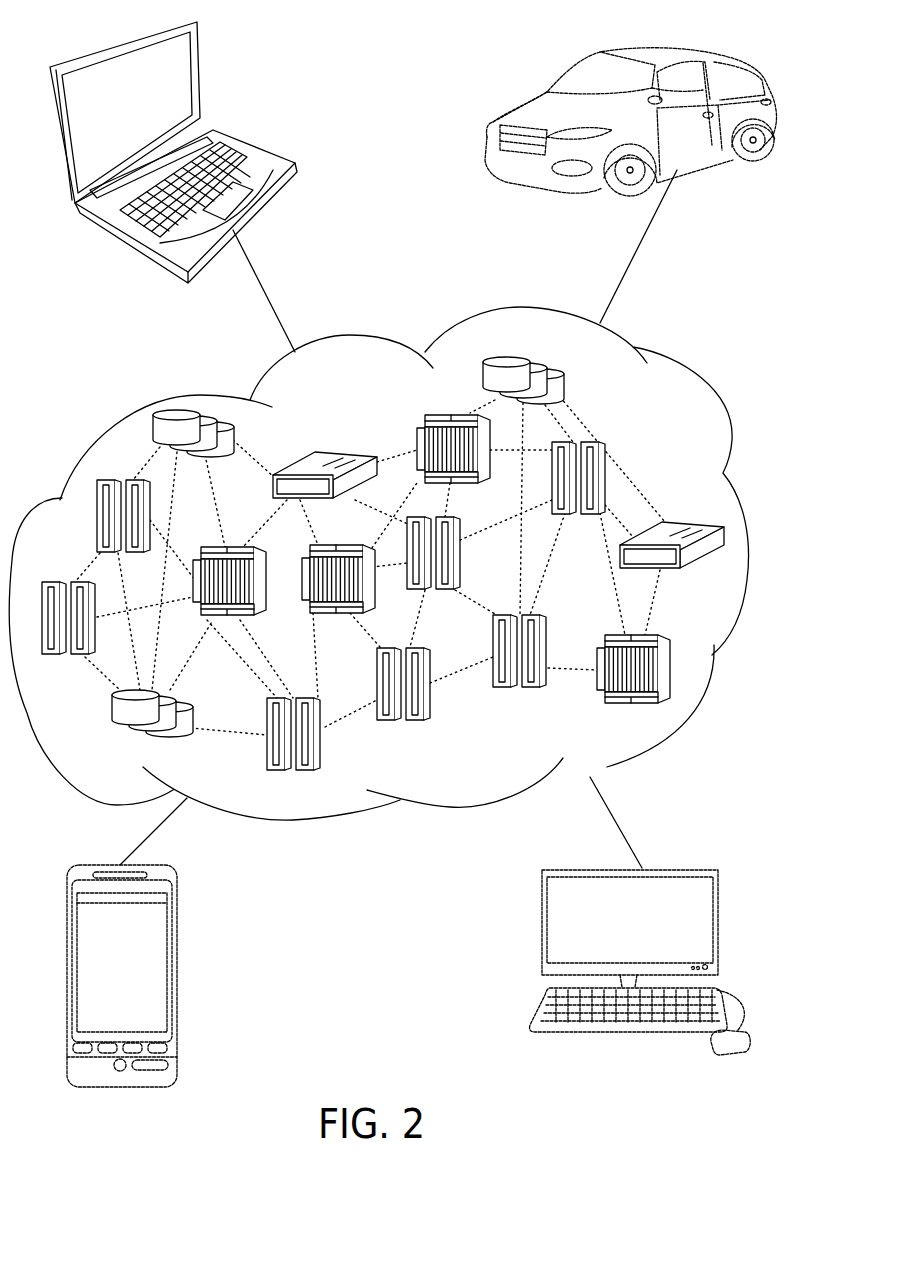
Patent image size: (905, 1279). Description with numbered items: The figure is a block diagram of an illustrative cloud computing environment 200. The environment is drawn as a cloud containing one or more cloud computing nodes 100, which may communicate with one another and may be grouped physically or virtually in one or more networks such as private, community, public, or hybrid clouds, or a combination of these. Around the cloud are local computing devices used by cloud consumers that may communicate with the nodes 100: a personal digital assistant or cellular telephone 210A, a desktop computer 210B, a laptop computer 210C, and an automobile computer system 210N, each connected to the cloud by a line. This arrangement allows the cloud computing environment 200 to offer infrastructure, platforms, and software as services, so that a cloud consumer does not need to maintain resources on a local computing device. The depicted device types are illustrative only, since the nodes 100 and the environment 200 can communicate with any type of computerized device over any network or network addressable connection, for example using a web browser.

The cloud computing node 100 is at (697, 503).
The cloud computing environment 200 is at (384, 563).
The personal digital assistant or cellular telephone 210A is at (173, 890).
The desktop computer 210B is at (720, 887).
The laptop computer 210C is at (253, 147).
The automobile computer system 210N is at (733, 63).